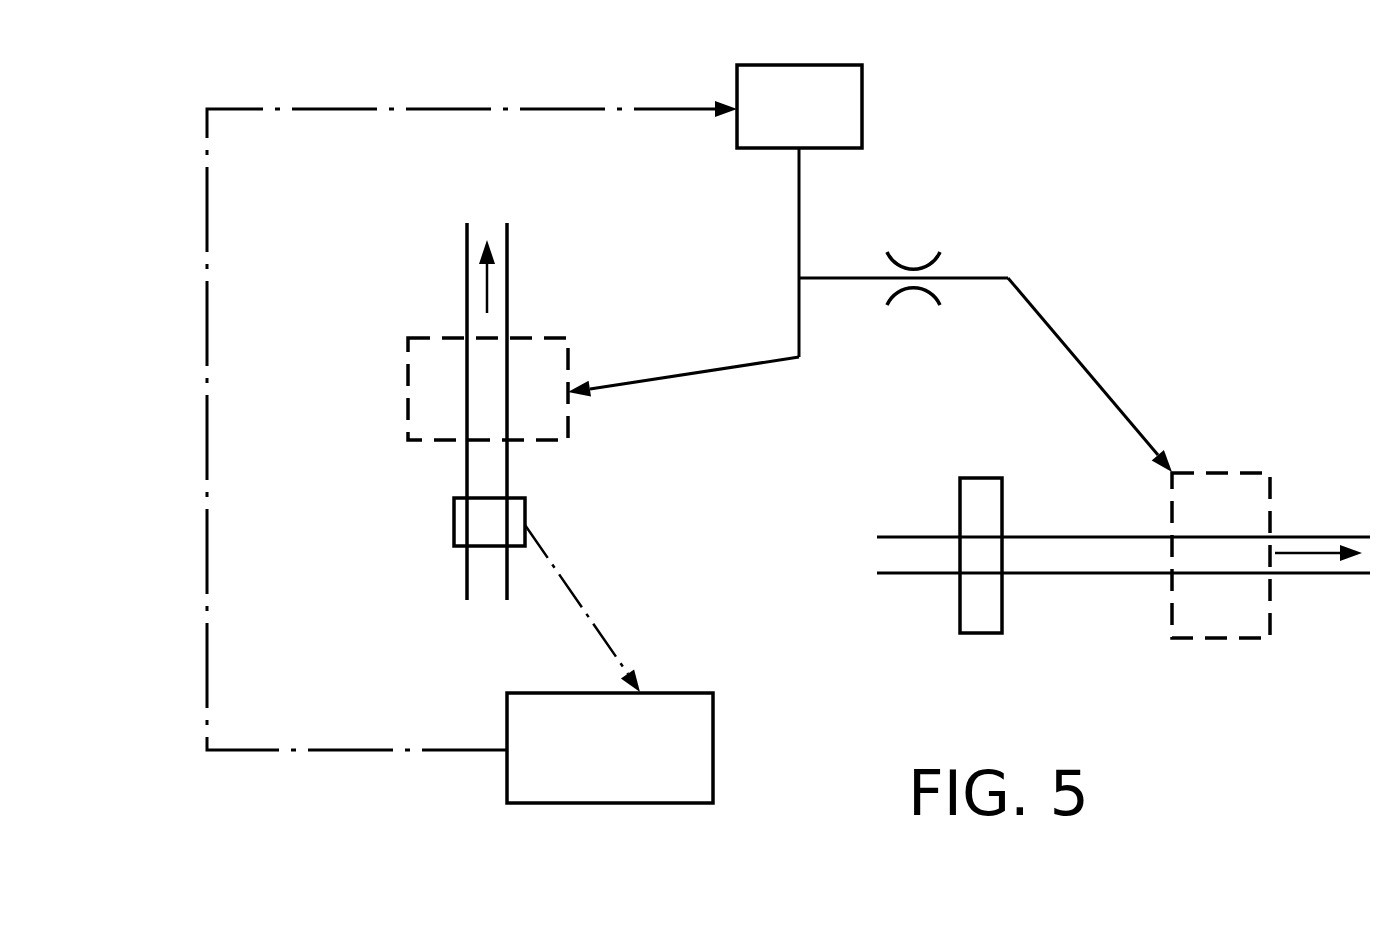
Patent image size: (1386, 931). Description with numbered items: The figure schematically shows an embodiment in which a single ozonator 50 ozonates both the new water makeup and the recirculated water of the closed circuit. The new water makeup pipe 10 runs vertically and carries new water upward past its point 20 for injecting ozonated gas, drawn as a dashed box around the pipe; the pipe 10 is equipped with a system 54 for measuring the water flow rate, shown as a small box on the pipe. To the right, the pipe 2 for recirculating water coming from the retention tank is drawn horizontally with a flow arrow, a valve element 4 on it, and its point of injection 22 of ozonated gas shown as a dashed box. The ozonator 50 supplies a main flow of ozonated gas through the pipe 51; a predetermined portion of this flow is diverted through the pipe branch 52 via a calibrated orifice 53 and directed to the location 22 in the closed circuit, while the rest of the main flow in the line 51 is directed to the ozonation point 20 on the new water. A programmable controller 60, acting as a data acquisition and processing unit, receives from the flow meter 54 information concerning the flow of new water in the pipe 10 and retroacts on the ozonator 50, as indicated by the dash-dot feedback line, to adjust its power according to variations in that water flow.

The recirculating water pipe 2 is at (1093, 573).
The valve 4 is at (982, 633).
The new water makeup pipe 10 is at (507, 276).
The point for injecting ozonated gas 20 is at (423, 338).
The point of injection of ozonated gas 22 is at (1270, 602).
The ozonator 50 is at (862, 85).
The pipe 51 is at (799, 212).
The pipe branch 52 is at (850, 278).
The calibrated orifice 53 is at (913, 288).
The system for measuring the water flow rate 54 is at (525, 507).
The programmable controller 60 is at (662, 786).